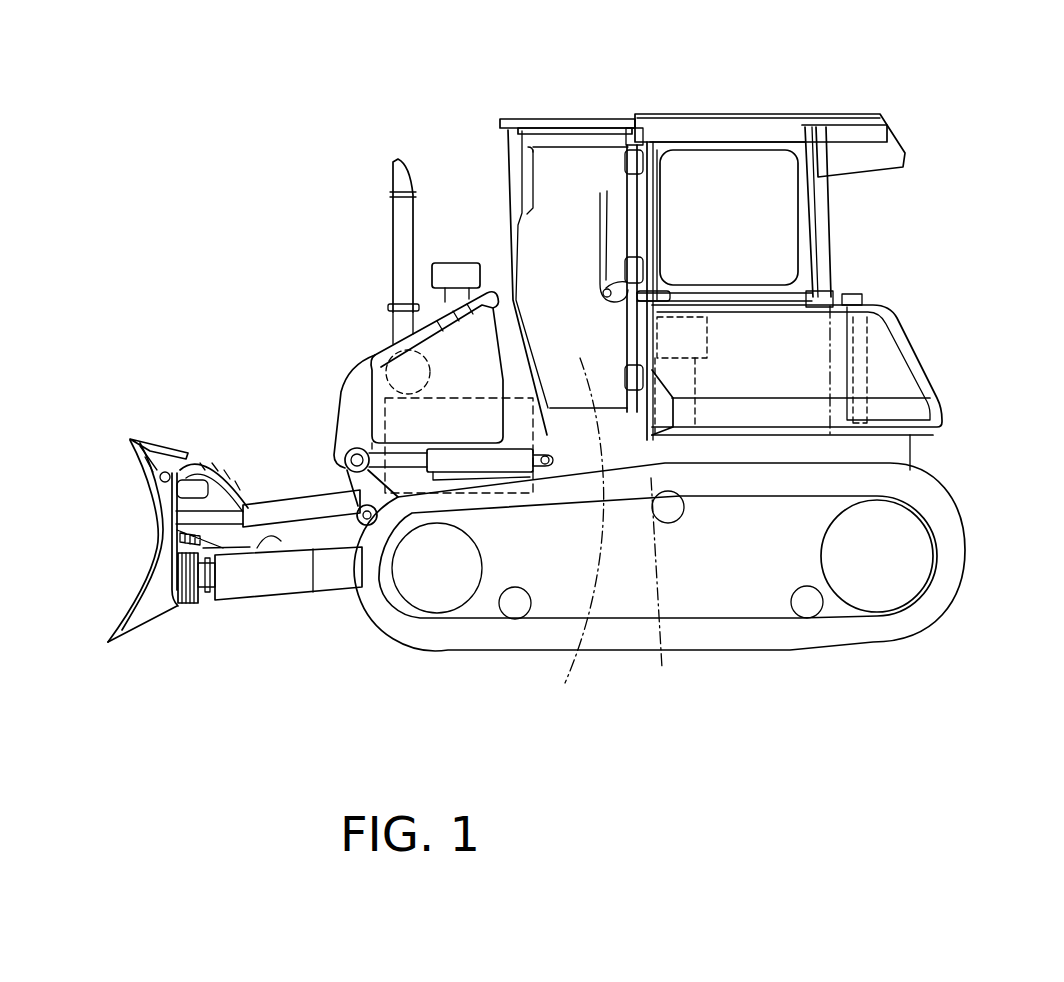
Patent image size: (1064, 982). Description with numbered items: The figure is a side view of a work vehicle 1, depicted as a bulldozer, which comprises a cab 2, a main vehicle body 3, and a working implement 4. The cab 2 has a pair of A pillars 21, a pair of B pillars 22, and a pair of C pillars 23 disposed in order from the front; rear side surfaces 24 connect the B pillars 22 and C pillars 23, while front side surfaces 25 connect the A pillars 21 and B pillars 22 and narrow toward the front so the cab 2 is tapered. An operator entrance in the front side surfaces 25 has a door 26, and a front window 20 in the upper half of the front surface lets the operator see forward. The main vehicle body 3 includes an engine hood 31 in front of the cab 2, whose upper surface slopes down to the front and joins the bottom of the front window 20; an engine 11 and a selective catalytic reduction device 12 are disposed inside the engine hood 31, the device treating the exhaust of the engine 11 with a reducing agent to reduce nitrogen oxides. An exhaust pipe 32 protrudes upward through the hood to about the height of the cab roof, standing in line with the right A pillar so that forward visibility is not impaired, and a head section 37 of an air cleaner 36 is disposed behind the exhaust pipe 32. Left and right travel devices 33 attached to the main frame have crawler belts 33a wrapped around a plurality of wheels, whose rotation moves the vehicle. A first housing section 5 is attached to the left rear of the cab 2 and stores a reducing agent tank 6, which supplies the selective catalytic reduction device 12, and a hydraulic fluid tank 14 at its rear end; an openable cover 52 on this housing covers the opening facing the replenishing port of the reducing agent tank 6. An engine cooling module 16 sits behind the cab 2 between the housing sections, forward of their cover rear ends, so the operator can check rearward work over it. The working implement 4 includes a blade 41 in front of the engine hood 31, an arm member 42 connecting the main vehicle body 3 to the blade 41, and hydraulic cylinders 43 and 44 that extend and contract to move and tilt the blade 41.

The work vehicle 1 is at (257, 142).
The cab 2 is at (727, 107).
The main vehicle body 3 is at (937, 470).
The working implement 4 is at (246, 612).
The first housing section 5 is at (940, 383).
The reducing agent tank 6 is at (655, 590).
The engine 11 is at (348, 405).
The selective catalytic reduction device 12 is at (368, 357).
The hydraulic fluid tank 14 is at (935, 367).
The engine cooling module 16 is at (878, 352).
The front window 20 is at (507, 163).
The A pillars 21 is at (514, 185).
The B pillars 22 is at (646, 145).
The C pillars 23 is at (820, 190).
The rear side surfaces 24 is at (736, 198).
The front side surfaces 25 is at (578, 224).
The door 26 is at (573, 539).
The engine hood 31 is at (352, 378).
The exhaust pipe 32 is at (402, 242).
The travel devices 33 is at (857, 653).
The crawler belt 33a is at (703, 650).
The air cleaner 36 is at (424, 298).
The head section 37 is at (460, 280).
The blade 41 is at (162, 567).
The arm member 42 is at (305, 577).
The hydraulic cylinder 43 is at (274, 518).
The hydraulic cylinder 44 is at (410, 462).
The openable cover 52 is at (705, 332).